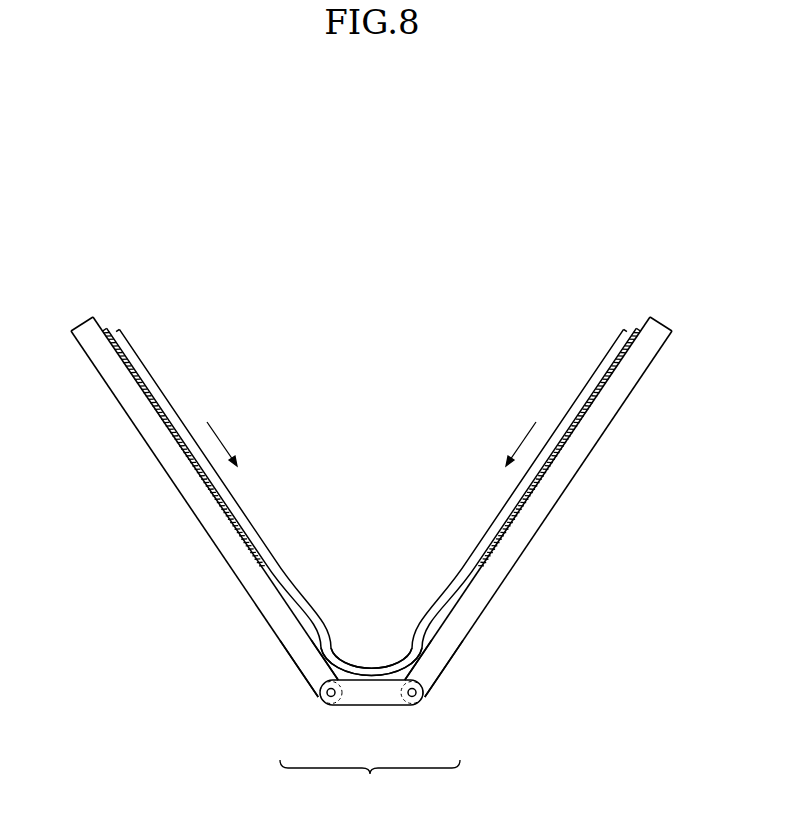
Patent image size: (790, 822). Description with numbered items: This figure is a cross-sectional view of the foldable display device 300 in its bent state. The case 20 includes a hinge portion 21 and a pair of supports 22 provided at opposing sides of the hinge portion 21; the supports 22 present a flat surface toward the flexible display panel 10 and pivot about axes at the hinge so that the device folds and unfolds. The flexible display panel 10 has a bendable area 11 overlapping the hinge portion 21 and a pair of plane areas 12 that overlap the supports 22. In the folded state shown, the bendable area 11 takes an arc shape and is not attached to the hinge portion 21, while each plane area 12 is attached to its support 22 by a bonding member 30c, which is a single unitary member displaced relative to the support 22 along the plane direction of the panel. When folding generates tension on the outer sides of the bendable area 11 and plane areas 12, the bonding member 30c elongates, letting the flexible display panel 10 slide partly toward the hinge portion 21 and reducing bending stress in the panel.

The foldable display device 300 is at (367, 423).
The flexible display panel 10 is at (561, 400).
The bendable area 11 is at (372, 671).
The plane area 12 is at (258, 536).
The case 20 is at (370, 783).
The hinge portion 21 is at (372, 696).
The support 22 is at (311, 663).
The bonding member 30c is at (558, 452).